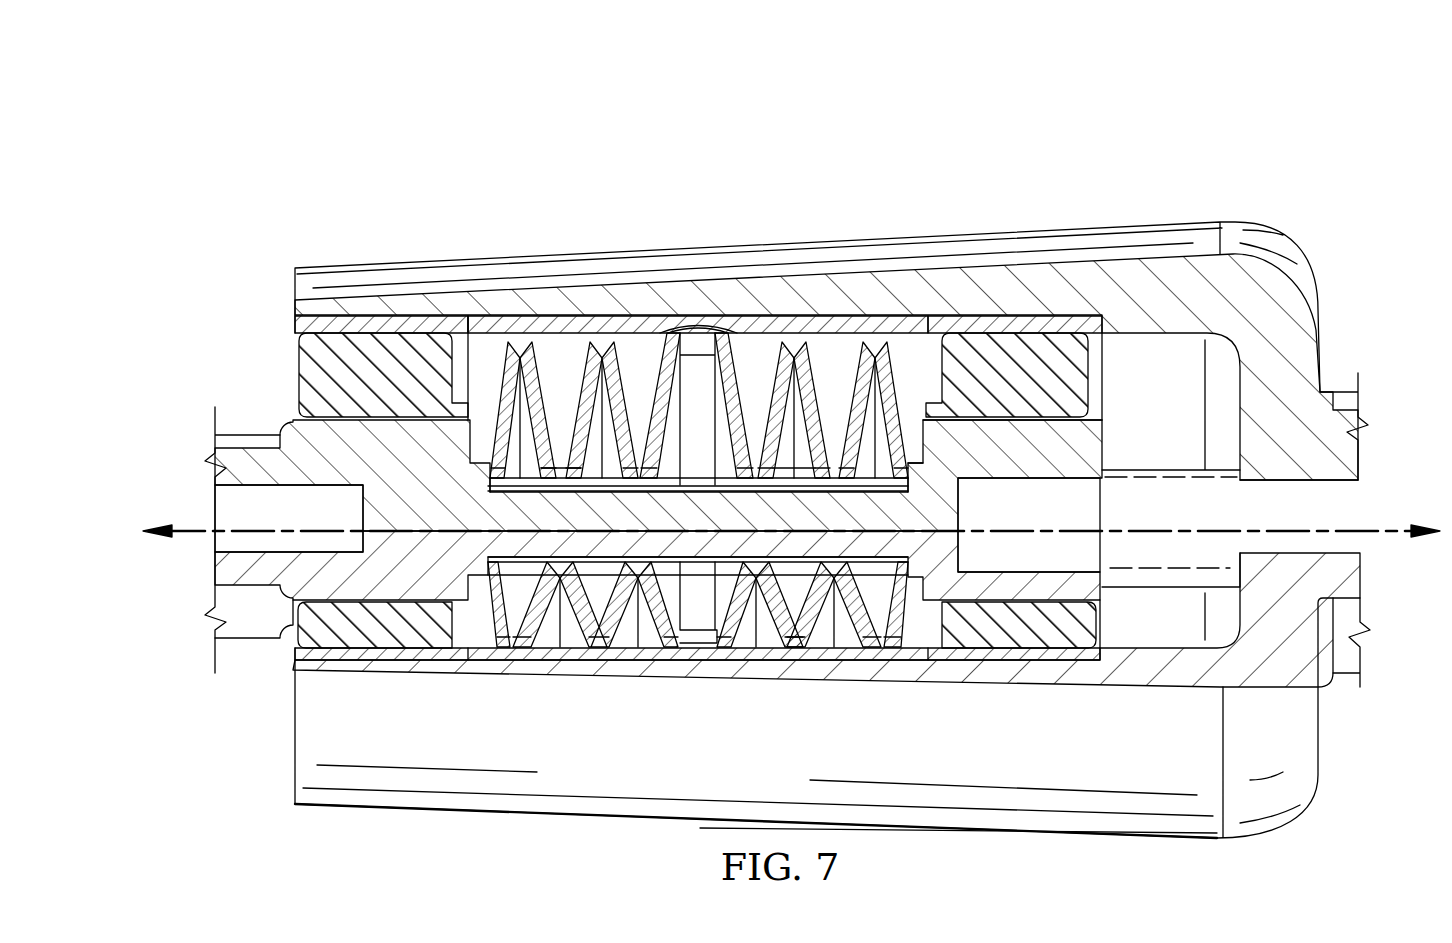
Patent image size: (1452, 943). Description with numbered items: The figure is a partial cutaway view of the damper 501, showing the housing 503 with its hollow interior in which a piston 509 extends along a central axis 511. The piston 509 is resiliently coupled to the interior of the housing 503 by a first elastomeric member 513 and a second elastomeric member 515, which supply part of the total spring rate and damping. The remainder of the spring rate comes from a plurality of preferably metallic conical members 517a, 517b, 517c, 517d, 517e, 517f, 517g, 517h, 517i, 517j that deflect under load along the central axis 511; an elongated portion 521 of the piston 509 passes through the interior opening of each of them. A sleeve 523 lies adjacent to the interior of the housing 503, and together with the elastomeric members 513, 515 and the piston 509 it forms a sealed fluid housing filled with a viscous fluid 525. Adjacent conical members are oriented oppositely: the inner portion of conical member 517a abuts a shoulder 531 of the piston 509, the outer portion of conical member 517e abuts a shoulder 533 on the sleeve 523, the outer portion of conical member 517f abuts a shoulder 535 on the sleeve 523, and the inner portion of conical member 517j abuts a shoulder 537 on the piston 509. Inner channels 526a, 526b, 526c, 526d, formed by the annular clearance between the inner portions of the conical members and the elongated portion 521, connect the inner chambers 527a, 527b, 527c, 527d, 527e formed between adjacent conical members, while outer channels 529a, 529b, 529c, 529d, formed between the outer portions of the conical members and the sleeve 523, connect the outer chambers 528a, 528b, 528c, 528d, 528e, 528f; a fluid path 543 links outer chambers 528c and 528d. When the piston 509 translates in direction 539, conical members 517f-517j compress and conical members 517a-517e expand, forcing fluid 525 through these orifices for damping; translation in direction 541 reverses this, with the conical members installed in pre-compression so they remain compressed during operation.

The damper 501 is at (1047, 133).
The housing 503 is at (1320, 347).
The piston 509 is at (263, 633).
The central axis 511 is at (228, 527).
The first elastomeric member 513 is at (1080, 363).
The second elastomeric member 515 is at (300, 377).
The conical member 517a is at (478, 390).
The conical member 517b is at (496, 358).
The conical member 517c is at (553, 344).
The conical member 517d is at (622, 343).
The conical member 517e is at (650, 343).
The conical member 517f is at (762, 344).
The conical member 517g is at (765, 490).
The conical member 517h is at (918, 457).
The conical member 517i is at (880, 344).
The conical member 517j is at (937, 353).
The elongated portion 521 is at (613, 567).
The sleeve 523 is at (758, 650).
The fluid 525 is at (705, 622).
The inner channel 526a is at (527, 486).
The inner channel 526b is at (627, 486).
The inner channel 526c is at (722, 487).
The inner channel 526d is at (900, 503).
The inner chamber 527a is at (480, 620).
The inner chamber 527b is at (566, 612).
The inner chamber 527c is at (693, 643).
The inner chamber 527d is at (830, 615).
The inner chamber 527e is at (885, 610).
The outer chamber 528a is at (450, 382).
The outer chamber 528b is at (545, 400).
The outer chamber 528c is at (655, 392).
The outer chamber 528d is at (788, 360).
The outer chamber 528e is at (836, 360).
The outer chamber 528f is at (916, 350).
The outer channel 529a is at (512, 343).
The outer channel 529b is at (600, 343).
The outer channel 529c is at (812, 344).
The outer channel 529d is at (882, 343).
The shoulder 531 is at (490, 462).
The shoulder 533 is at (690, 343).
The shoulder 535 is at (703, 322).
The shoulder 537 is at (958, 508).
The direction 539 is at (174, 538).
The direction 541 is at (1416, 556).
The fluid path 543 is at (718, 325).